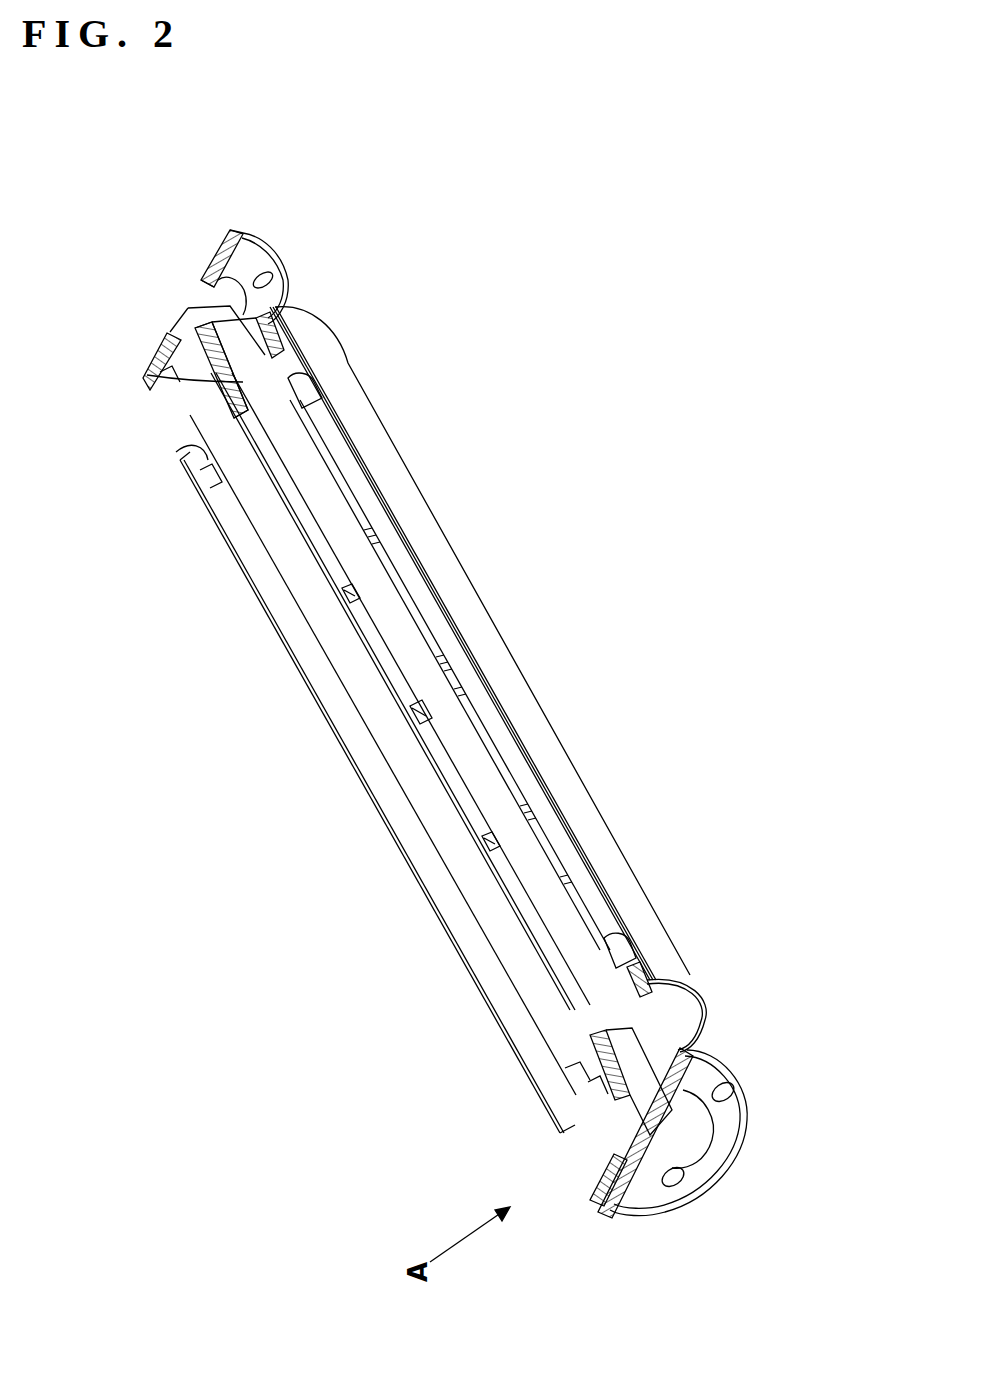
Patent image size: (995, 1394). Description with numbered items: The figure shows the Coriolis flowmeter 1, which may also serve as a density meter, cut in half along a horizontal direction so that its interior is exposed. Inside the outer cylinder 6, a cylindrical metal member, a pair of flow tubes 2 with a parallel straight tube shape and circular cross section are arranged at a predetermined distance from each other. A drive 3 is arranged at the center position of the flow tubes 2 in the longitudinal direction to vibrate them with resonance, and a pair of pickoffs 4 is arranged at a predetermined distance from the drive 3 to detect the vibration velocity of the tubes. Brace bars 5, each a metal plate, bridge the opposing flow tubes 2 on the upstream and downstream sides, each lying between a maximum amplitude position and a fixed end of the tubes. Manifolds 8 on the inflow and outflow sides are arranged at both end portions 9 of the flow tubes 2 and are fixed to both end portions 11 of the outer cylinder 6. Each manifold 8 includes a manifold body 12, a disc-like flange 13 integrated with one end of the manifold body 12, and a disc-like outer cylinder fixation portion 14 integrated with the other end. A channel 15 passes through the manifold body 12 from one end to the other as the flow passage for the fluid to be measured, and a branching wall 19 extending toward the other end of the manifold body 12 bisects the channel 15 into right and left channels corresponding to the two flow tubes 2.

The Coriolis flowmeter 1 is at (282, 856).
The flow tubes 2 is at (343, 530).
The drive 3 is at (420, 725).
The pickoffs 4 is at (350, 597).
The brace bars 5 is at (310, 387).
The outer cylinder 6 is at (528, 720).
The manifolds 8 is at (158, 345).
The end portions 9 is at (205, 478).
The end portions 11 is at (310, 313).
The manifold body 12 is at (185, 420).
The flange 13 is at (243, 233).
The outer cylinder fixation portion 14 is at (185, 455).
The channel 15 is at (187, 335).
The branching wall 19 is at (165, 380).